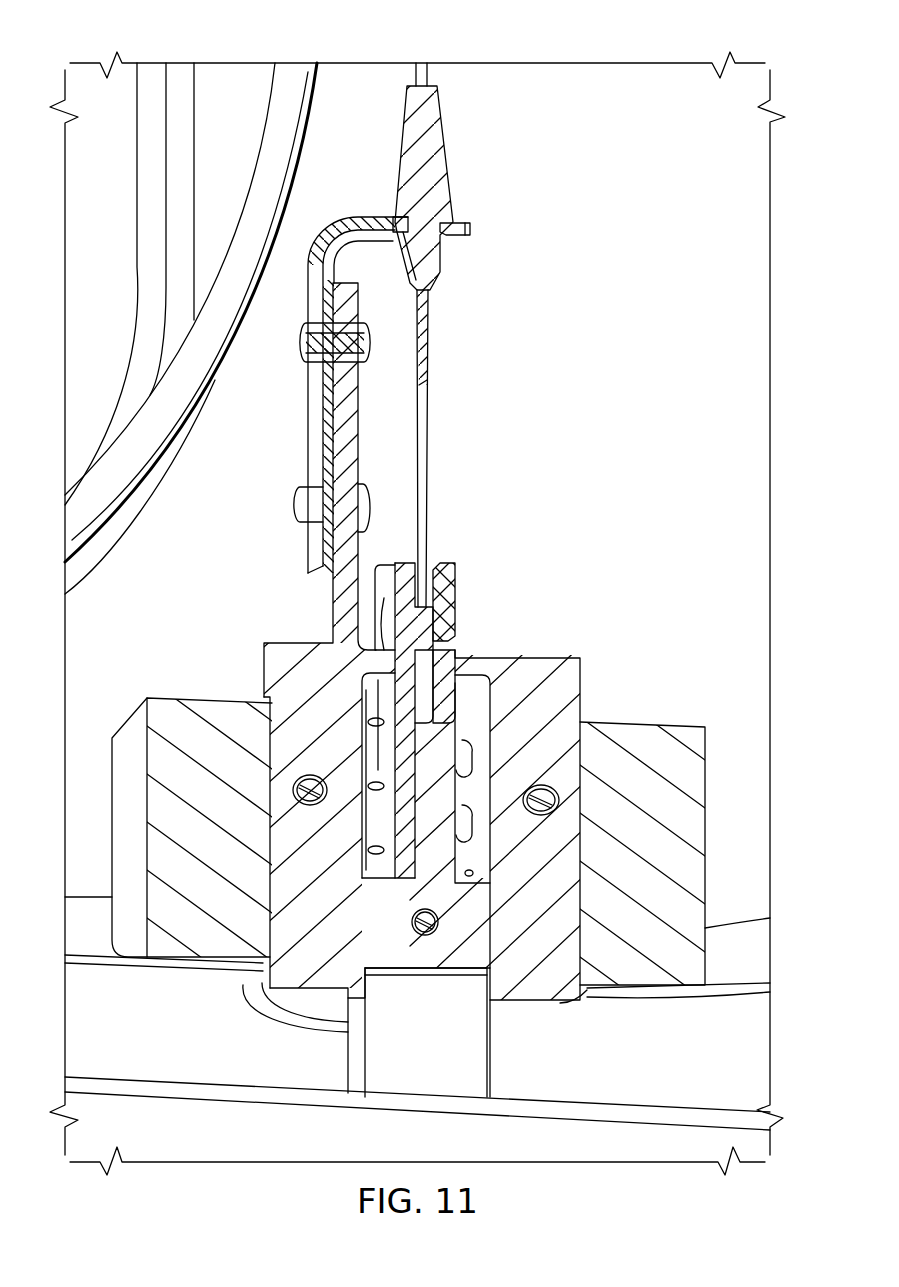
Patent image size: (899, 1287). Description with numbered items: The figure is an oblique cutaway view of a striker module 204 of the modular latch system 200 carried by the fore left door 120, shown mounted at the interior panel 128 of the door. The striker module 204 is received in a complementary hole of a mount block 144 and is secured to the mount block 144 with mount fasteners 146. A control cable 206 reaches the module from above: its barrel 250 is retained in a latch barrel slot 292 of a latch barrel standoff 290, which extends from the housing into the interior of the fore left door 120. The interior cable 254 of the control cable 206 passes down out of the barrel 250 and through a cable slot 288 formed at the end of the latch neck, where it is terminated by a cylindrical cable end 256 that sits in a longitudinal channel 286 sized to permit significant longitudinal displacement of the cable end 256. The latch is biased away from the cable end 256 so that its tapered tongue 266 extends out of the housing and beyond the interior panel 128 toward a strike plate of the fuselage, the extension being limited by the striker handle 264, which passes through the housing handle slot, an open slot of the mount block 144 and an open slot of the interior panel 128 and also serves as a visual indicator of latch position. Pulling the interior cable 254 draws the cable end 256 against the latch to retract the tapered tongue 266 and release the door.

The modular latch system 200 is at (633, 156).
The control cable 206 is at (430, 76).
The barrel 250 is at (448, 166).
The latch barrel slot 292 is at (445, 240).
The latch barrel standoff 290 is at (312, 248).
The interior cable 254 is at (428, 458).
The cable slot 288 is at (447, 566).
The cable end 256 is at (428, 612).
The striker module 204 is at (544, 660).
The interior panel 128 is at (771, 541).
The mount block 144 is at (612, 723).
The longitudinal channel 286 is at (370, 745).
The mount fastener 146 is at (312, 806).
The fore left door 120 is at (753, 953).
The striker handle 264 is at (426, 937).
The tapered tongue 266 is at (470, 1053).